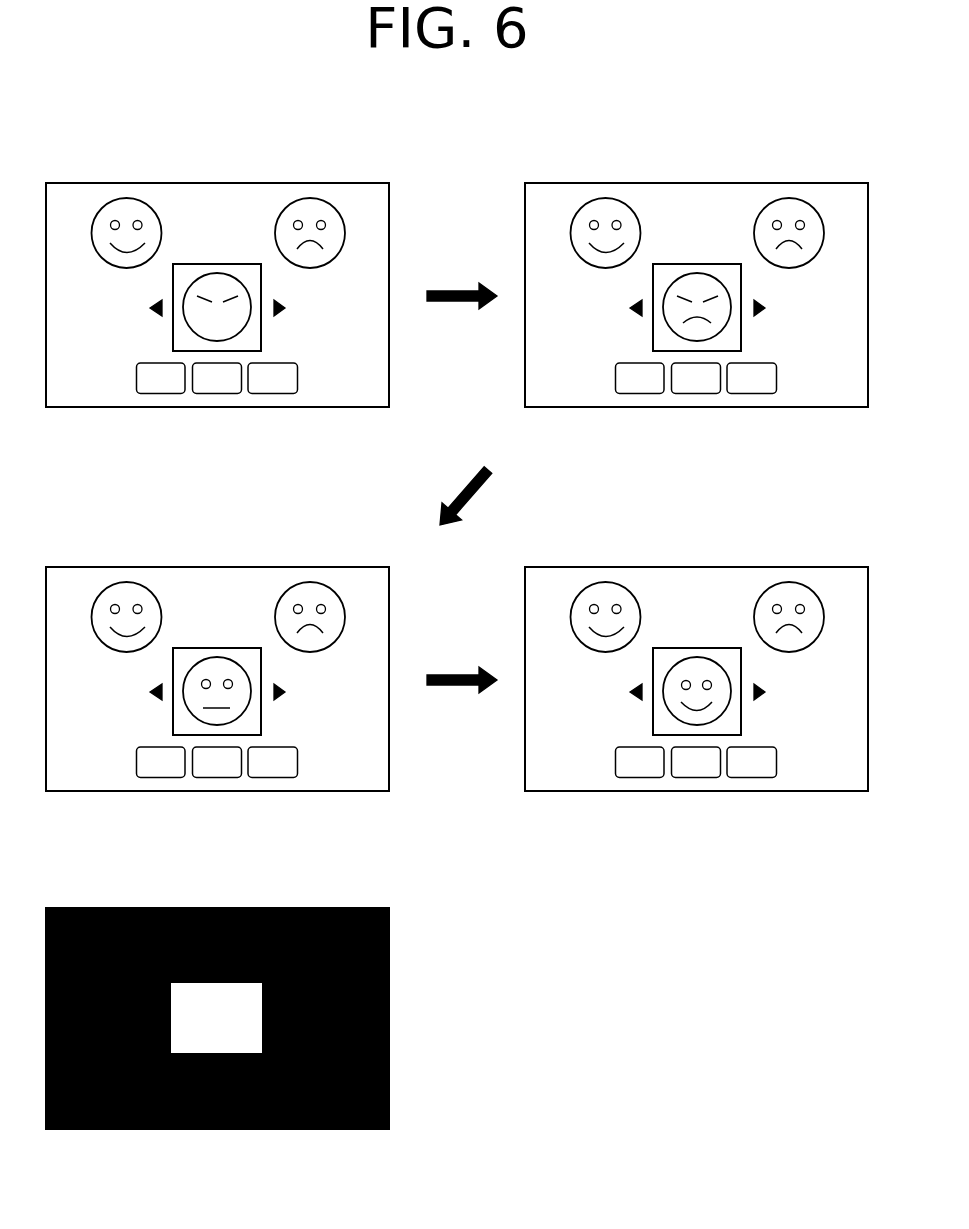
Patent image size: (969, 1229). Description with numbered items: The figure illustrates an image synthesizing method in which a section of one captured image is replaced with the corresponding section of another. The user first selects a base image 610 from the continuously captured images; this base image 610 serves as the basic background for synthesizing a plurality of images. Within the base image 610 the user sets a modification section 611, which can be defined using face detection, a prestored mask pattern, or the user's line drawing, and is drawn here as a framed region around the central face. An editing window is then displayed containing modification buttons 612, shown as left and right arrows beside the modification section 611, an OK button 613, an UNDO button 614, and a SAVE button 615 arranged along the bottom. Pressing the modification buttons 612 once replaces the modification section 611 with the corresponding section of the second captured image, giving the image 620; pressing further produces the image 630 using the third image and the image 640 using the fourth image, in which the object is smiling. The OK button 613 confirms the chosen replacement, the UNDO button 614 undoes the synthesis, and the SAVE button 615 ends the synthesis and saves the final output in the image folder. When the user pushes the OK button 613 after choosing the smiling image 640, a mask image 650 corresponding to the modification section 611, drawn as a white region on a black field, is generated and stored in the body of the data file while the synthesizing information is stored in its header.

The base image 610 is at (352, 183).
The modification section 611 is at (172, 333).
The modification buttons 612 is at (285, 297).
The OK button 613 is at (156, 395).
The UNDO button 614 is at (218, 395).
The SAVE button 615 is at (275, 395).
The image 620 is at (831, 183).
The image 630 is at (70, 567).
The image 640 is at (831, 567).
The mask image 650 is at (70, 907).